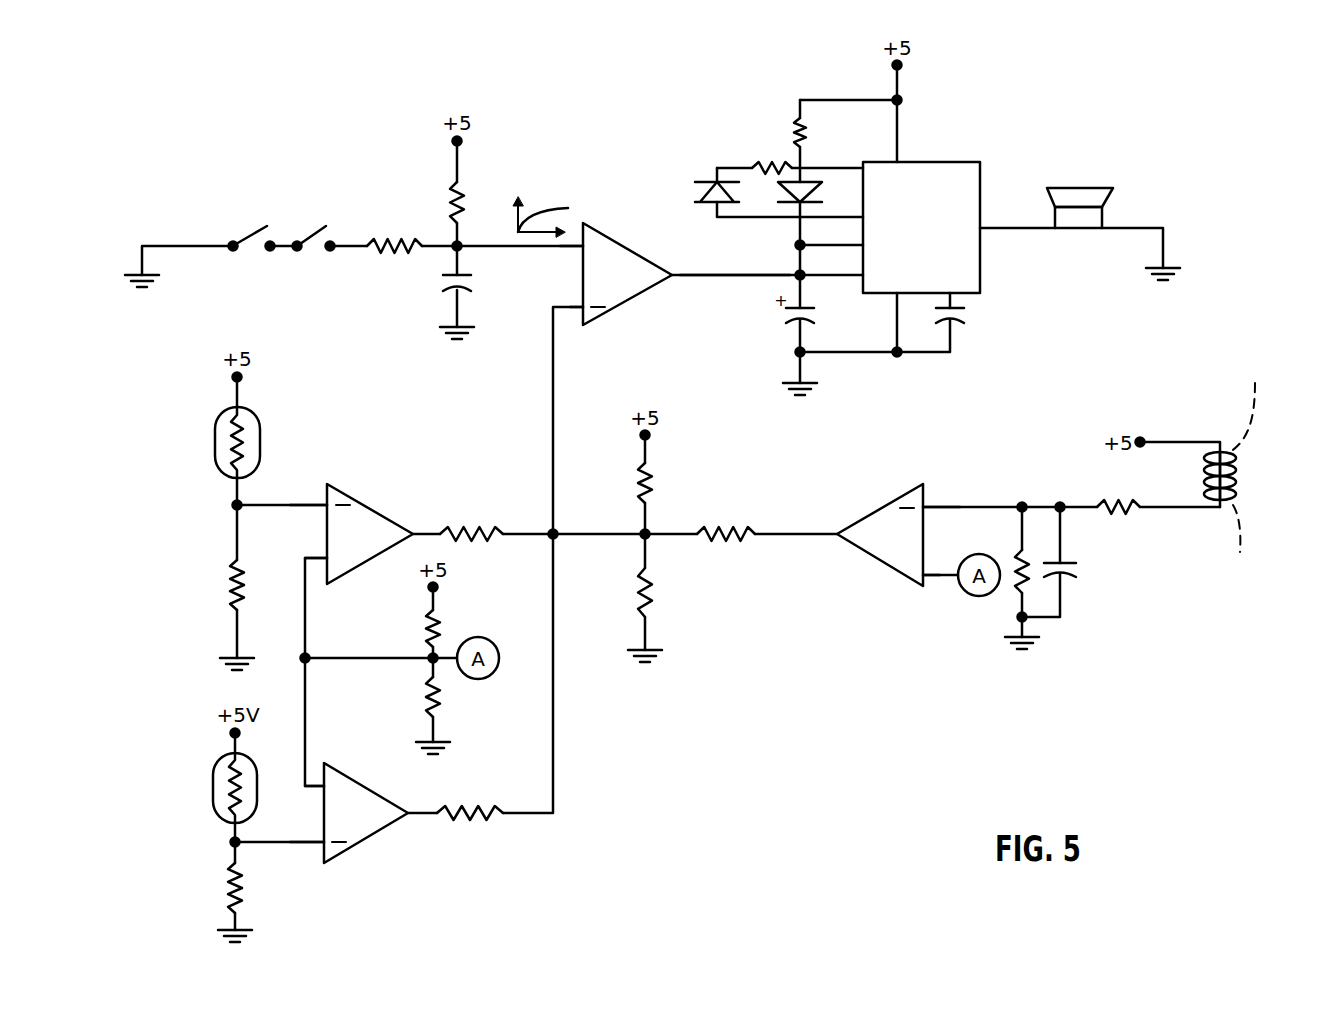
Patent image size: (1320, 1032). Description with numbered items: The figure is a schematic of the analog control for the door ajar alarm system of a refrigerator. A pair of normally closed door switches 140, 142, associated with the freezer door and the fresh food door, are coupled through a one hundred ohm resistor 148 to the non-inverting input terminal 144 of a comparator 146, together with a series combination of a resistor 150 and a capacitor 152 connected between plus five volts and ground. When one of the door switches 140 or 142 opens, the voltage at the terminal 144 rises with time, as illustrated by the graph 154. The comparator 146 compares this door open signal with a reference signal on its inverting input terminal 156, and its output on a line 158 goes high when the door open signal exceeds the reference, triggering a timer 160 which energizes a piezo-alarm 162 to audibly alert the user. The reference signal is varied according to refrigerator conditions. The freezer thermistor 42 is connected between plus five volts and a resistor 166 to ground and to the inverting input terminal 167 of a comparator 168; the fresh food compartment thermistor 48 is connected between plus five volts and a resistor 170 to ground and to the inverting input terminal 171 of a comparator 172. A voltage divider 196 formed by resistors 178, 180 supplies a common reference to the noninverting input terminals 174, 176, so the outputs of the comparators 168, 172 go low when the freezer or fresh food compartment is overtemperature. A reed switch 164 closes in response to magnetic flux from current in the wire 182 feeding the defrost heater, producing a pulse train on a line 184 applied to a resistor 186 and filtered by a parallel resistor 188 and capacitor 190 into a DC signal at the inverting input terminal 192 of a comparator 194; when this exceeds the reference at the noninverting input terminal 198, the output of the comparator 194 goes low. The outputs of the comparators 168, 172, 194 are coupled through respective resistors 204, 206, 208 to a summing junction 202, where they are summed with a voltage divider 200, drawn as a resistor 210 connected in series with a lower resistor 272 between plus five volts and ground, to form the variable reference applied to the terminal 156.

The door switch 140 is at (252, 237).
The door switch 142 is at (311, 237).
The resistor 148 is at (395, 252).
The resistor 150 is at (462, 187).
The capacitor 152 is at (470, 277).
The graph 154 is at (560, 208).
The non-inverting input terminal 144 is at (583, 248).
The comparator 146 is at (614, 254).
The inverting input terminal 156 is at (583, 323).
The line 158 is at (725, 276).
The timer 160 is at (980, 258).
The piezo-alarm 162 is at (1075, 220).
The fresh food compartment thermistor 48 is at (220, 436).
The resistor 170 is at (232, 585).
The inverting input terminal 171 is at (322, 505).
The noninverting input terminal 176 is at (322, 550).
The comparator 172 is at (357, 517).
The resistor 206 is at (473, 527).
The voltage divider 196 is at (466, 591).
The resistor 178 is at (443, 613).
The resistor 180 is at (441, 695).
The freezer thermistor 42 is at (218, 787).
The resistor 166 is at (230, 892).
The noninverting input terminal 174 is at (320, 787).
The comparator 168 is at (355, 836).
The inverting input terminal 167 is at (318, 858).
The resistor 204 is at (479, 822).
The summing junction 202 is at (556, 530).
The voltage divider 200 is at (684, 480).
The resistor 210 is at (652, 488).
The resistor 272 is at (652, 586).
The resistor 208 is at (728, 542).
The comparator 194 is at (880, 525).
The inverting input terminal 192 is at (926, 505).
The noninverting input terminal 198 is at (924, 580).
The resistor 188 is at (1020, 548).
The capacitor 190 is at (1075, 574).
The resistor 186 is at (1098, 503).
The line 184 is at (1165, 509).
The reed switch 164 is at (1233, 478).
The wire 182 is at (1247, 418).